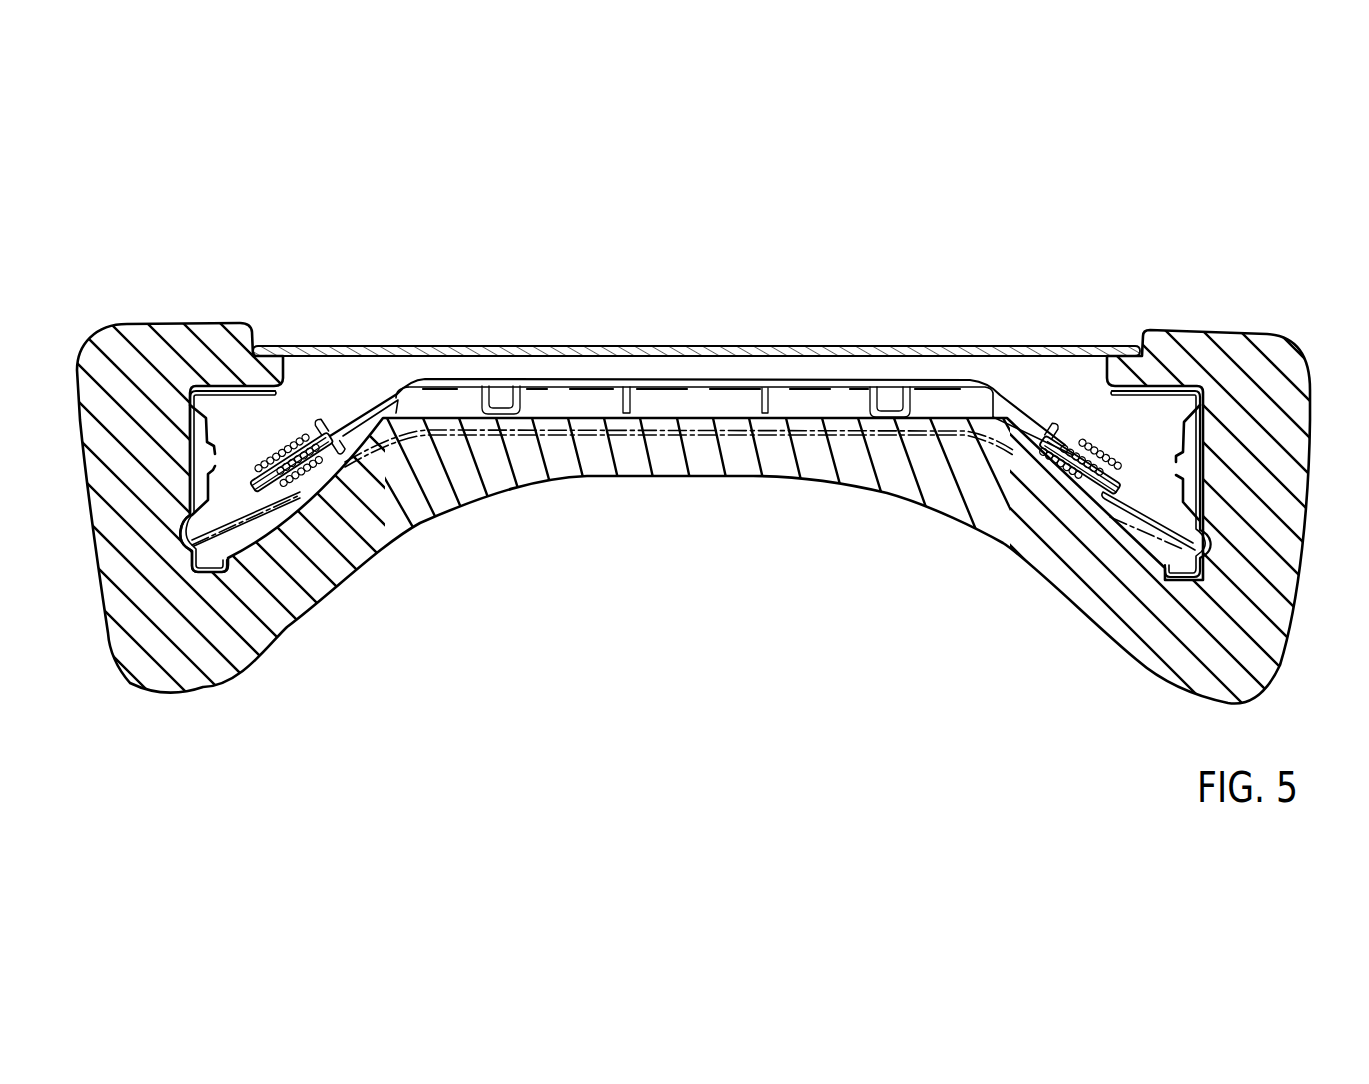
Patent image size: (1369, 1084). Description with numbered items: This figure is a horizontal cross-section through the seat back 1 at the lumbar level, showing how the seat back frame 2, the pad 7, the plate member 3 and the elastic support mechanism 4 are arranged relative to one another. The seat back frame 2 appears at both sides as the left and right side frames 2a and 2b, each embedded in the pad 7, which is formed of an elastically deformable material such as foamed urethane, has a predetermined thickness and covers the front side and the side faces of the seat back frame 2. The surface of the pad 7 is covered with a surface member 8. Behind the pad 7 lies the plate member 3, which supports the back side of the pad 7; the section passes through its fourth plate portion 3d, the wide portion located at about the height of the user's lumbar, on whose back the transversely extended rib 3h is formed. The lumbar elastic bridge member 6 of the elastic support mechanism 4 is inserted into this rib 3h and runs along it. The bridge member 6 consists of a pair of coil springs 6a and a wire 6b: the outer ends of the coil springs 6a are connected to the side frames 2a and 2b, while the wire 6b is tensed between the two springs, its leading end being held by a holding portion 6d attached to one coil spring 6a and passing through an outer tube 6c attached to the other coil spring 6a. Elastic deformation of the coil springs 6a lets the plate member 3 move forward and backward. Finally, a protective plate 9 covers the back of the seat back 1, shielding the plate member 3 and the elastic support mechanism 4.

The seat back 1 is at (518, 279).
The seat back frame 2 is at (696, 484).
The side frame 2a is at (1200, 462).
The side frame 2b is at (213, 453).
The plate member 3 is at (666, 376).
The fourth plate portion 3d is at (808, 383).
The rib 3h is at (883, 403).
The elastic support mechanism 4 is at (697, 412).
The lumbar elastic bridge member 6 is at (369, 393).
The coil spring 6a is at (290, 462).
The wire 6b is at (973, 383).
The outer tube 6c is at (143, 325).
The holding portion 6d is at (1063, 437).
The pad 7 is at (118, 570).
The surface member 8 is at (108, 638).
The protective plate 9 is at (733, 350).